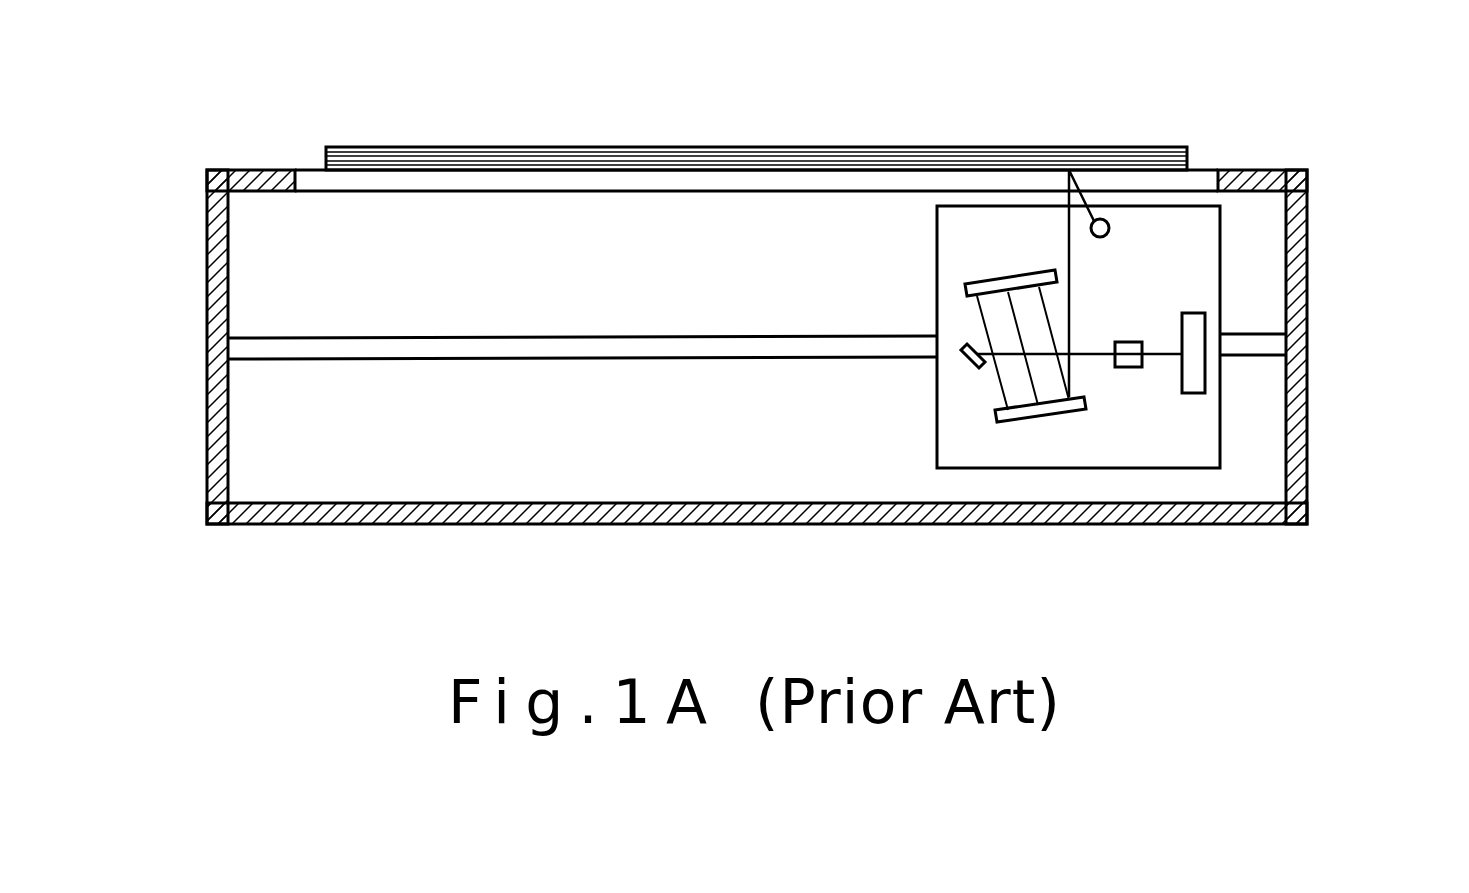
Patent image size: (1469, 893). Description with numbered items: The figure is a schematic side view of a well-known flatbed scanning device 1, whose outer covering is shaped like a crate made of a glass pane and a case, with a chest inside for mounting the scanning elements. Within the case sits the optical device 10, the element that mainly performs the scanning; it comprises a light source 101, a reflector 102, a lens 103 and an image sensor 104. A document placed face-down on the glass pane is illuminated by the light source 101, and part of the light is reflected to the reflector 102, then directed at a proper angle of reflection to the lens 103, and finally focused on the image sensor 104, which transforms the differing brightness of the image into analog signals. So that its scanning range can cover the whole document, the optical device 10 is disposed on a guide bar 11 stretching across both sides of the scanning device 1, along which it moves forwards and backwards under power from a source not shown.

The scanning device 1 is at (1386, 118).
The optical device 10 is at (1128, 447).
The guide bar 11 is at (232, 349).
The light source 101 is at (1109, 228).
The reflector 102 is at (1030, 415).
The lens 103 is at (973, 367).
The image sensor 104 is at (1190, 378).